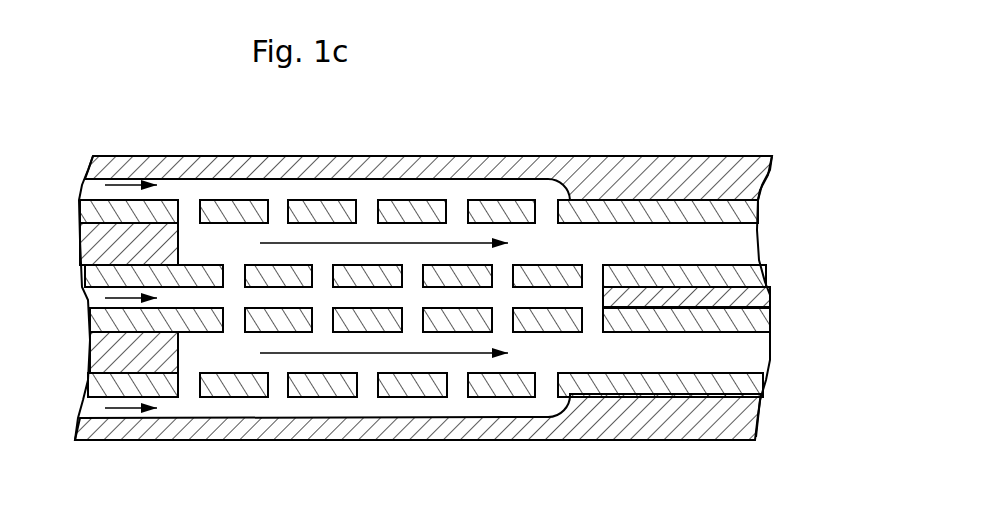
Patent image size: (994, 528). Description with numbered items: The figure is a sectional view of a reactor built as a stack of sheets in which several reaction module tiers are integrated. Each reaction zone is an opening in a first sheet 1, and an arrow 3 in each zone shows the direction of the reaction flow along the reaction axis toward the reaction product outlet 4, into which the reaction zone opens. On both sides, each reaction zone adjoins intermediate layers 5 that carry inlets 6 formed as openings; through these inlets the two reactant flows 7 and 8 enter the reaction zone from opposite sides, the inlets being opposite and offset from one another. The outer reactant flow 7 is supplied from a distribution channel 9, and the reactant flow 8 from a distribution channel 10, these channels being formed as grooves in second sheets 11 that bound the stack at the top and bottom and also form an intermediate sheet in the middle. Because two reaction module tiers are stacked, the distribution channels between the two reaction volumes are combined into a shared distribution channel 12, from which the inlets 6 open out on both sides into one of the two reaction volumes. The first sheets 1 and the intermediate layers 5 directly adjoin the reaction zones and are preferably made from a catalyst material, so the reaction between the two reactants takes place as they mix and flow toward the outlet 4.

The first sheet 1 is at (108, 250).
The arrow 3 is at (385, 242).
The reaction product outlet 4 is at (745, 238).
The intermediate layer 5 is at (750, 209).
The inlet 6 is at (278, 210).
The reactant flow 7 is at (118, 185).
The reactant flow 8 is at (110, 302).
The distribution channel 9 is at (316, 190).
The distribution channel 10 is at (372, 297).
The second sheet 11 is at (752, 172).
The shared distribution channel 12 is at (448, 297).